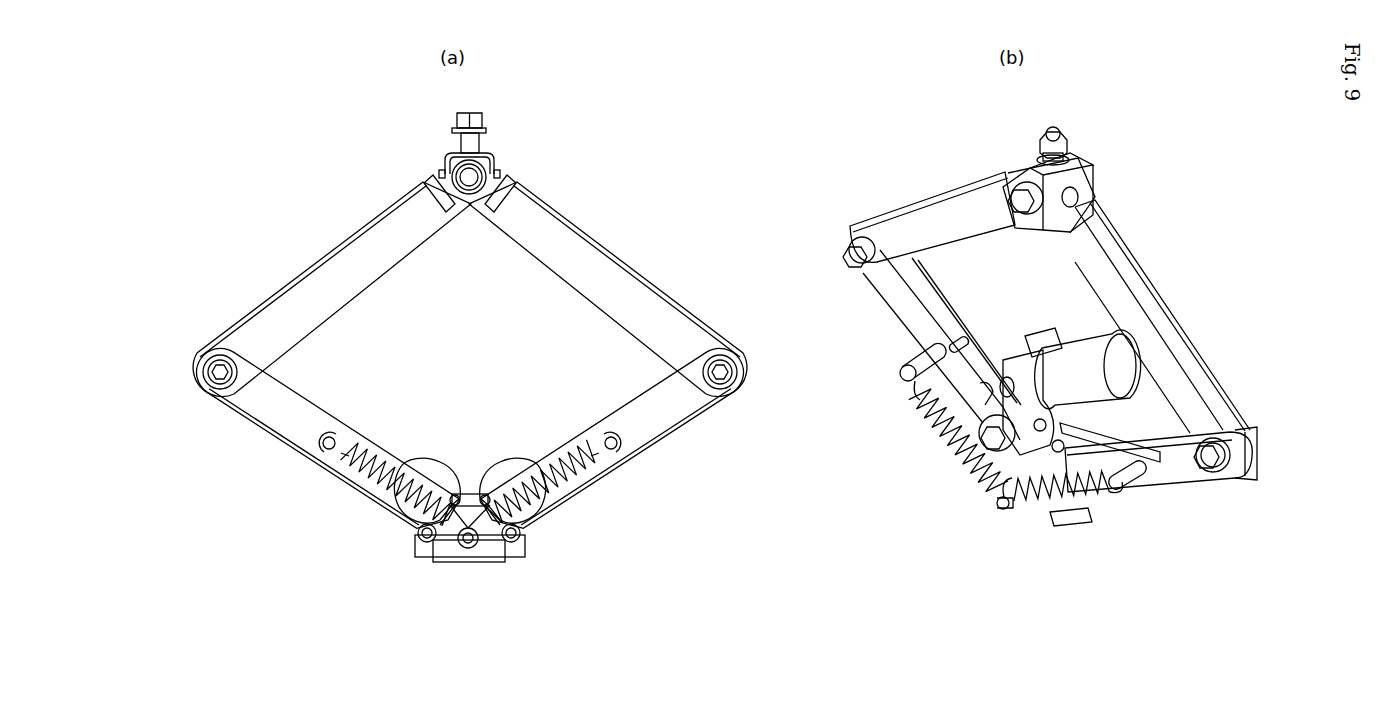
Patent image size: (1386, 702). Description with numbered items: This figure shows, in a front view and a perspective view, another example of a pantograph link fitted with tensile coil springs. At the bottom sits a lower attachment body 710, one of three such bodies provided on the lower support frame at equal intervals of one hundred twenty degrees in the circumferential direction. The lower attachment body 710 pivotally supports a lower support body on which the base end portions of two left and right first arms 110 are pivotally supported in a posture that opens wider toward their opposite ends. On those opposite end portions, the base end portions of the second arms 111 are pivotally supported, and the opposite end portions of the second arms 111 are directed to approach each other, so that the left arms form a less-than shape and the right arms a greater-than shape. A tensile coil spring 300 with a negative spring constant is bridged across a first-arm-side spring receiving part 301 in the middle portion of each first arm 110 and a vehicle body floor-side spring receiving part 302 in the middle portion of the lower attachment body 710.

The first arm 110 is at (313, 423).
The second arm 111 is at (343, 237).
The tensile coil spring 300 is at (370, 482).
The first-arm-side spring receiving part 301 is at (320, 450).
The vehicle body floor-side spring receiving part 302 is at (468, 540).
The lower attachment body 710 is at (493, 556).